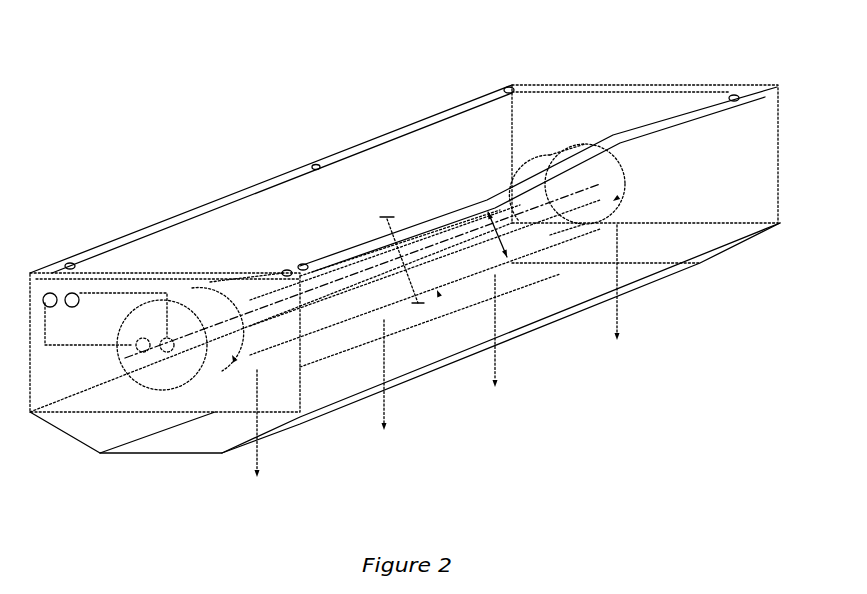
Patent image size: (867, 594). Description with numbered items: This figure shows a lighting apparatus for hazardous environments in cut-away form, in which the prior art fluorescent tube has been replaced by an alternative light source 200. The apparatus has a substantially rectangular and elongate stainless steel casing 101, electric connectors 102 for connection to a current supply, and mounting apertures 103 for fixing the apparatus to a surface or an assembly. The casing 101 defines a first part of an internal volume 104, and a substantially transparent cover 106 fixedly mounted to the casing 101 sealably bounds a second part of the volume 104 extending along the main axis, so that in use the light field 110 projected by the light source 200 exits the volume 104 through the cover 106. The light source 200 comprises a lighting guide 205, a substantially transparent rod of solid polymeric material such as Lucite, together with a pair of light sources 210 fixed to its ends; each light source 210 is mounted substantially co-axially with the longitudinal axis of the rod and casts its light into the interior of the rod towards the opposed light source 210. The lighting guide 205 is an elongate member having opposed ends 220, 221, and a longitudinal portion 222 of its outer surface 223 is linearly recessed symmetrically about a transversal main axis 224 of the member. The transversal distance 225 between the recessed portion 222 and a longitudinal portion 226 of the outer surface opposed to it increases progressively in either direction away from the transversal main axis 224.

The casing 101 is at (770, 206).
The electric connectors 102 is at (50, 293).
The mounting apertures 103 is at (510, 87).
The internal volume 104 is at (280, 213).
The transparent cover 106 is at (163, 449).
The light field 110 is at (258, 468).
The light source 200 is at (309, 335).
The lighting guide 205 is at (207, 287).
The light sources 210 is at (180, 318).
The first end 220 is at (235, 360).
The second end 221 is at (616, 199).
The recessed longitudinal portion 222 is at (442, 228).
The outer surface 223 is at (540, 208).
The transversal main axis 224 is at (387, 215).
The transversal distance 225 is at (510, 254).
The opposed longitudinal portion 226 is at (439, 294).